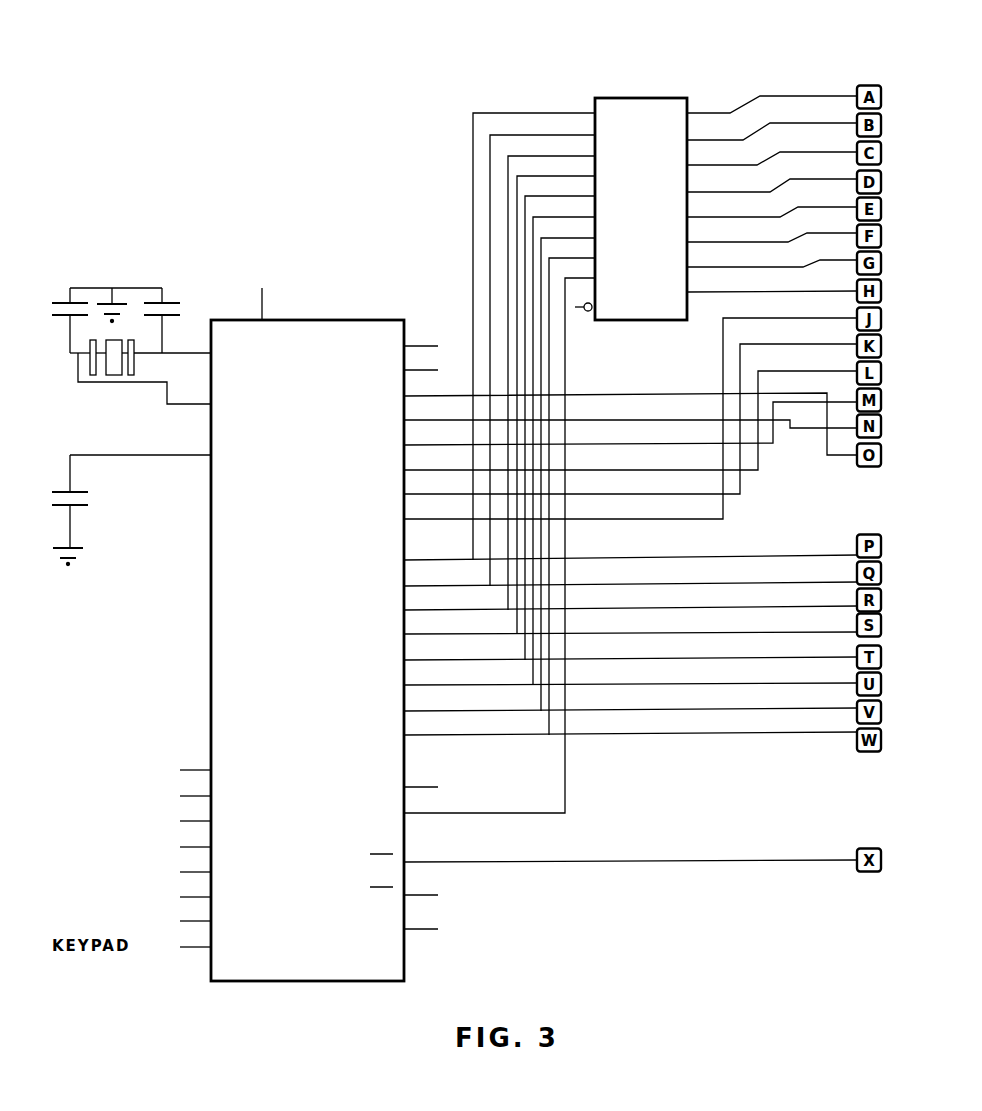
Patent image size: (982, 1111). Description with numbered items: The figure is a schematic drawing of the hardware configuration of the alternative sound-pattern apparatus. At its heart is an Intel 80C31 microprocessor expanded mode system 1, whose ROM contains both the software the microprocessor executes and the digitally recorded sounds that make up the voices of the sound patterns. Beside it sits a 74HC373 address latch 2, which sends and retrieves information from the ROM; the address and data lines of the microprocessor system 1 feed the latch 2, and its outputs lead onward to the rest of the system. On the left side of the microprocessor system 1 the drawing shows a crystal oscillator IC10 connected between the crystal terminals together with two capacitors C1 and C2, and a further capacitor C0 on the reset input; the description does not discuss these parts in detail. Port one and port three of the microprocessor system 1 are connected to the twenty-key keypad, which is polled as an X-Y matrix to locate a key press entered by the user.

The Intel 80C31 microprocessor expanded mode system 1 is at (311, 314).
The 74HC373 address latch 2 is at (688, 92).
The crystal load capacitor C1 is at (63, 313).
The crystal load capacitor C2 is at (170, 313).
The reset capacitor C0 is at (83, 501).
The crystal oscillator IC10 is at (131, 360).